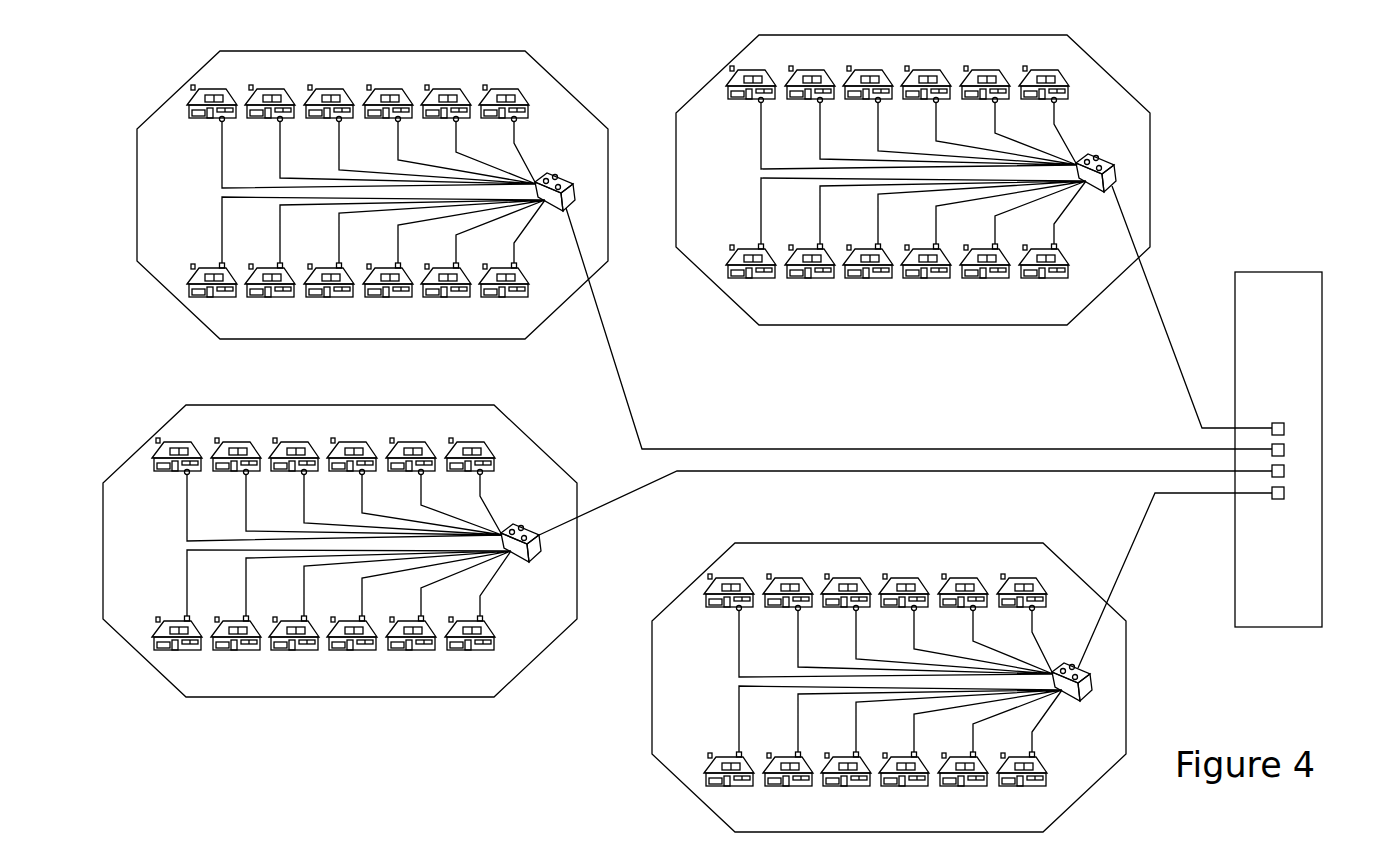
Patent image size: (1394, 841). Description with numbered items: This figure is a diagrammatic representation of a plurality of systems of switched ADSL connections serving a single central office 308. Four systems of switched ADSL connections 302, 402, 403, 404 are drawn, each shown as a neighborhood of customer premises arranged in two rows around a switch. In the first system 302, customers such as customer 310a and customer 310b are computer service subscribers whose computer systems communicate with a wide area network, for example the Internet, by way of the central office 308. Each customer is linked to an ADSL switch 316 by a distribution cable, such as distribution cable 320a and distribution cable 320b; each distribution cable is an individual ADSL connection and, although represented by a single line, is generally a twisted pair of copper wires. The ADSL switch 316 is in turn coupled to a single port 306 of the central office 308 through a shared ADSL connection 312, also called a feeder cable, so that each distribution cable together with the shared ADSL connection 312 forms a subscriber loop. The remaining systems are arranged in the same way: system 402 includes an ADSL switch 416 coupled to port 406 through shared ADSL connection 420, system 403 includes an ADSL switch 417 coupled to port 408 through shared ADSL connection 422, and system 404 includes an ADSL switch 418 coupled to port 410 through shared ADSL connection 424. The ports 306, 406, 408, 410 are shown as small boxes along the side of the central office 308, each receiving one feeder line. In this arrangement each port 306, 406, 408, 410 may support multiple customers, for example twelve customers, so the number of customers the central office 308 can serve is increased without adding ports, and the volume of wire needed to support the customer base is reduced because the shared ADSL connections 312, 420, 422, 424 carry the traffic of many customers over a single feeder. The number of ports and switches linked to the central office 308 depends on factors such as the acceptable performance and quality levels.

The system of switched ADSL connections 302 is at (547, 422).
The single port 306 is at (1284, 471).
The central office 308 is at (1334, 250).
The customer 310a is at (178, 442).
The customer 310b is at (238, 441).
The shared ADSL connection 312 is at (773, 468).
The ADSL switch 316 is at (543, 546).
The distribution cable 320a is at (185, 524).
The distribution cable 320b is at (243, 508).
The system of switched ADSL connections 402 is at (582, 75).
The system of switched ADSL connections 403 is at (1143, 66).
The system of switched ADSL connections 404 is at (1076, 554).
The port 406 is at (1284, 493).
The port 408 is at (1284, 450).
The port 410 is at (1284, 429).
The ADSL switch 416 is at (577, 189).
The ADSL switch 417 is at (1118, 177).
The ADSL switch 418 is at (1094, 684).
The shared ADSL connection 420 is at (913, 447).
The shared ADSL connection 422 is at (1156, 298).
The shared ADSL connection 424 is at (1190, 496).